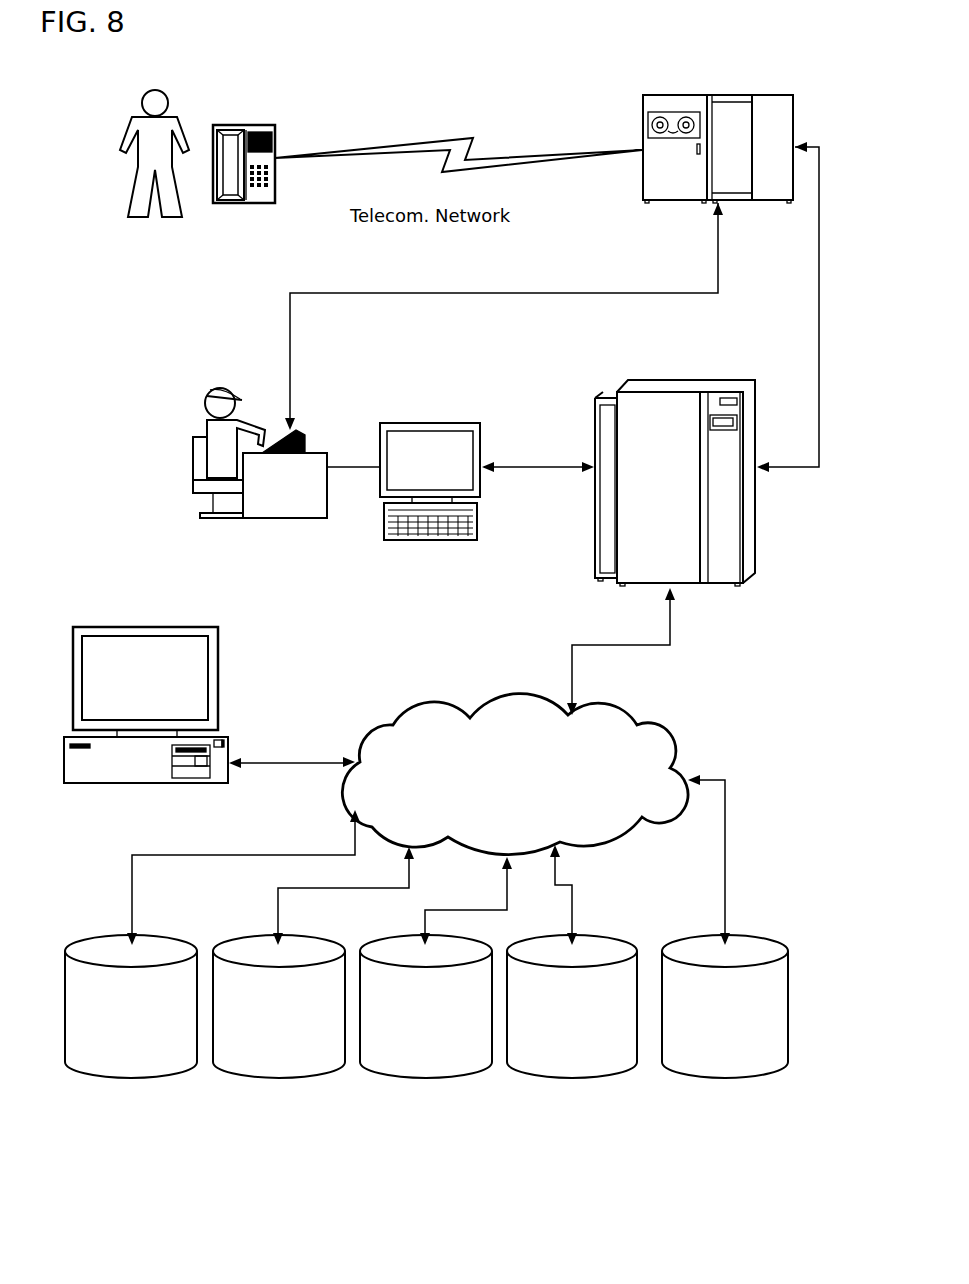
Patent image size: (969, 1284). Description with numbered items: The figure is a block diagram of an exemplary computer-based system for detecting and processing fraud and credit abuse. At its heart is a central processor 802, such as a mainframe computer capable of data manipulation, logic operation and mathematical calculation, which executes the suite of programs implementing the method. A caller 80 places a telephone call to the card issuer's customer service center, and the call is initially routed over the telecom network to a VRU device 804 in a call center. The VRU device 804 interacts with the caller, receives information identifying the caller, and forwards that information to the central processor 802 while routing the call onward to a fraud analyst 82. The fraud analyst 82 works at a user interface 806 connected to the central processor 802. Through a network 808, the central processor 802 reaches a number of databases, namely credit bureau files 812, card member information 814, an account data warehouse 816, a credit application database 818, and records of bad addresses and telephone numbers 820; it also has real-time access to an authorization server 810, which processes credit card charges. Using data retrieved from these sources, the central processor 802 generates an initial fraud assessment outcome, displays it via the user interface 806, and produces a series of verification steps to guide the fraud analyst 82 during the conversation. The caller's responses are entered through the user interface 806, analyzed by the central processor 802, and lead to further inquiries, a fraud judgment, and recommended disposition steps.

The caller 80 is at (120, 157).
The fraud analyst 82 is at (193, 461).
The central processor 802 is at (757, 505).
The VRU device 804 is at (752, 95).
The user interface 806 is at (437, 423).
The network 808 is at (672, 728).
The authorization server 810 is at (218, 650).
The credit bureau files 812 is at (136, 1080).
The card member information 814 is at (283, 1080).
The account data warehouse 816 is at (430, 1080).
The credit application database 818 is at (576, 1080).
The records of bad addresses and telephone numbers 820 is at (729, 1080).